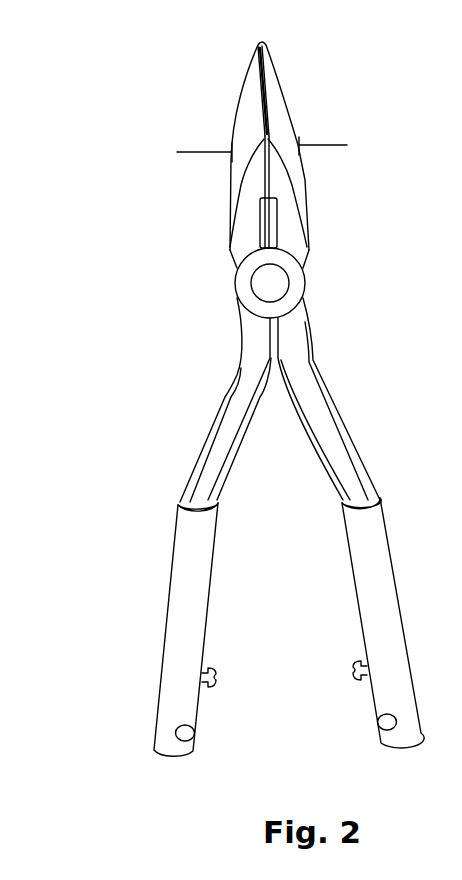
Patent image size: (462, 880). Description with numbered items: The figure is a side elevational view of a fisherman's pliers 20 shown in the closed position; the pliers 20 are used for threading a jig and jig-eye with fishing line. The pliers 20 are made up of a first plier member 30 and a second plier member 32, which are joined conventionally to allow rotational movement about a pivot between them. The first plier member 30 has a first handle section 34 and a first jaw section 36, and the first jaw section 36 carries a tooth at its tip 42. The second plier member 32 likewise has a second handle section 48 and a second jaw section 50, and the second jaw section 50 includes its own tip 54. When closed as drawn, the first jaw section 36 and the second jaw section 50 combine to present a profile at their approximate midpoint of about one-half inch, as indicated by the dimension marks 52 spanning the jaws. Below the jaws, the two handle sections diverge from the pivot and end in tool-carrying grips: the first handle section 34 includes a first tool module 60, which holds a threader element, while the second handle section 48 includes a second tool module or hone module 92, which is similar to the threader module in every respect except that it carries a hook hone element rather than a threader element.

The fisherman's pliers 20 is at (92, 82).
The first plier member 30 is at (243, 392).
The second plier member 32 is at (320, 404).
The first handle section 34 is at (218, 447).
The first jaw section 36 is at (307, 238).
The tip 42 is at (263, 43).
The second handle section 48 is at (325, 436).
The second jaw section 50 is at (249, 196).
The profile 52 is at (318, 146).
The tip 54 is at (250, 73).
The first tool module 60 is at (193, 592).
The hone module 92 is at (378, 555).